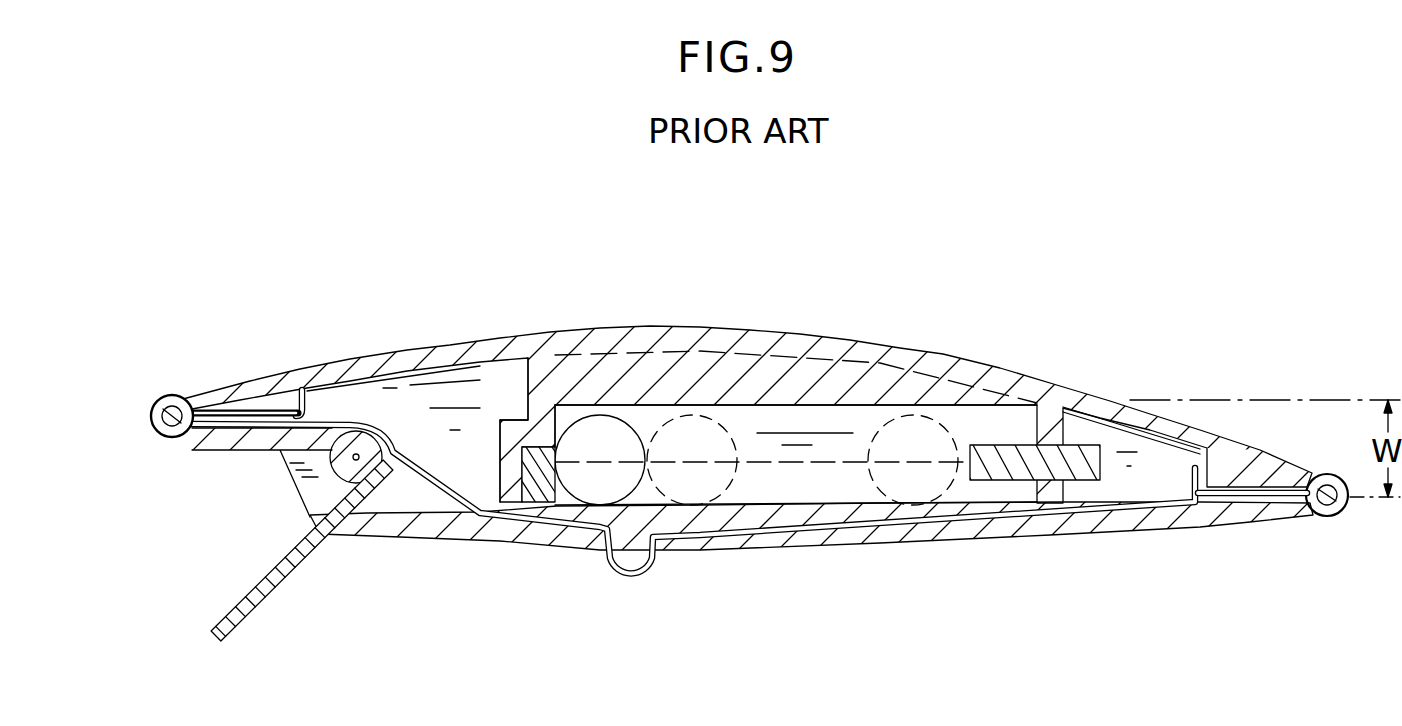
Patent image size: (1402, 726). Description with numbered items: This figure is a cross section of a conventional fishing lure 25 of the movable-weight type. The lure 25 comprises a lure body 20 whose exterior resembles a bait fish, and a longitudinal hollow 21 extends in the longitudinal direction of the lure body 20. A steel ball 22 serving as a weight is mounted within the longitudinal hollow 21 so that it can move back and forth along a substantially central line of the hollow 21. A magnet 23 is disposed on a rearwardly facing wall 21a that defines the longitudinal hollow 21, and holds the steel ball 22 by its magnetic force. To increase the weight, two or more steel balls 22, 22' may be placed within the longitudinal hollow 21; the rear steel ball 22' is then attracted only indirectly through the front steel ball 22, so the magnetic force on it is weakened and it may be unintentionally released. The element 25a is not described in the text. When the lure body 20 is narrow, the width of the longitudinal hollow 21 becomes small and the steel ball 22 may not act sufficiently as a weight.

The lure body 20 is at (943, 353).
The longitudinal hollow 21 is at (814, 418).
The rearwardly facing wall 21a is at (562, 407).
The steel ball 22 is at (593, 517).
The rear steel ball 22' is at (803, 521).
The magnet 23 is at (525, 498).
The fishing lure 25 is at (1116, 300).
The hinge pin 25a is at (160, 398).